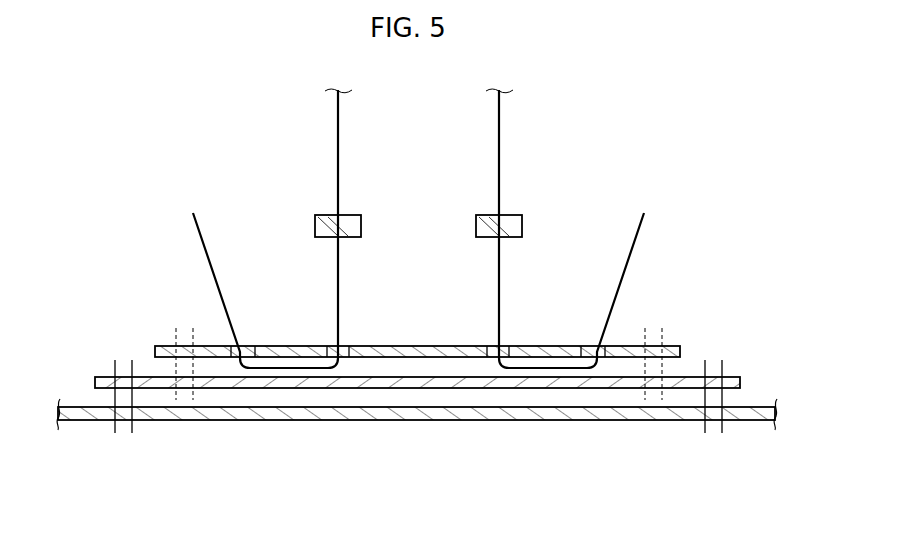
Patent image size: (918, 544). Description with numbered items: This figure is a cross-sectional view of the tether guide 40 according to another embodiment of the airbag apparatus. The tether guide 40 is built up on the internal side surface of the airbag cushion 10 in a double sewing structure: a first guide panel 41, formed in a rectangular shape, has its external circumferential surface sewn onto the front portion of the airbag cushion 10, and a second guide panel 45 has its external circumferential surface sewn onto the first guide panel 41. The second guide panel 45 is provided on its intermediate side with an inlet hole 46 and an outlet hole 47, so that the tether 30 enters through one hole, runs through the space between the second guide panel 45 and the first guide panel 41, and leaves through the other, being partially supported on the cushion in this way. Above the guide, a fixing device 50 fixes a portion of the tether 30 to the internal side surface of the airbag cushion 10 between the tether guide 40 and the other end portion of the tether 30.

The airbag cushion 10 is at (257, 420).
The tether 30 is at (337, 131).
The tether guide 40 is at (396, 342).
The first guide panel 41 is at (100, 377).
The second guide panel 45 is at (165, 347).
The inlet hole 46 is at (509, 352).
The outlet hole 47 is at (254, 352).
The fixing device 50 is at (476, 215).